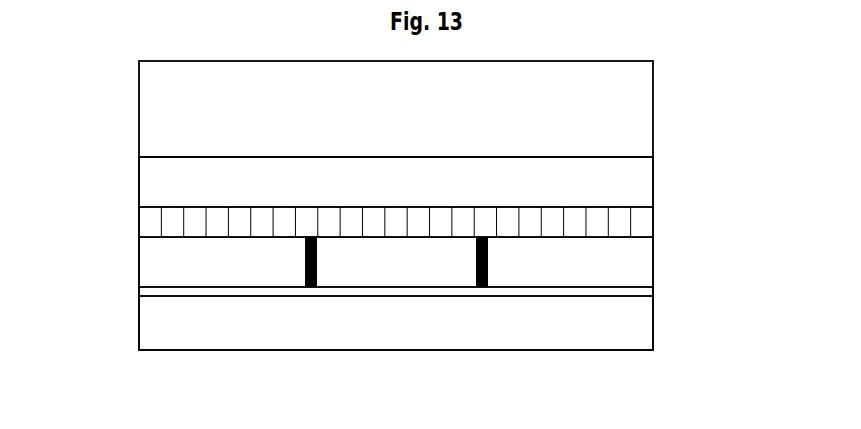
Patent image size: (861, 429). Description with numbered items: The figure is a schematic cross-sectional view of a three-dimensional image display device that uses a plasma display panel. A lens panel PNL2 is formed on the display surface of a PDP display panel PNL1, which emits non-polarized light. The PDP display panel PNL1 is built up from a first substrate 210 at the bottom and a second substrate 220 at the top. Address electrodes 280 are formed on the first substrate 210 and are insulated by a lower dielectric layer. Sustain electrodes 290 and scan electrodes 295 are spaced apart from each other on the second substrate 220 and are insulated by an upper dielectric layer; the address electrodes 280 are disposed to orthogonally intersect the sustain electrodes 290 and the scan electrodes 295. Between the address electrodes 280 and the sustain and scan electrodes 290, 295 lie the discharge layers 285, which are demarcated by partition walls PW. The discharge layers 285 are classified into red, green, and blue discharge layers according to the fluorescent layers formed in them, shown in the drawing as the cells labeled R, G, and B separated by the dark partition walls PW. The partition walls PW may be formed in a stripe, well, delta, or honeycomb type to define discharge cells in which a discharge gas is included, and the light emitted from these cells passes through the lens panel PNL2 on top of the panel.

The lens panel PNL2 is at (145, 108).
The PDP display panel PNL1 is at (740, 162).
The second substrate 220 is at (648, 182).
The sustain electrodes 290 is at (396, 220).
The scan electrodes 295 is at (145, 219).
The discharge layers 285 is at (435, 315).
The partition walls PW is at (313, 288).
The address electrodes 280 is at (648, 293).
The first substrate 210 is at (648, 318).